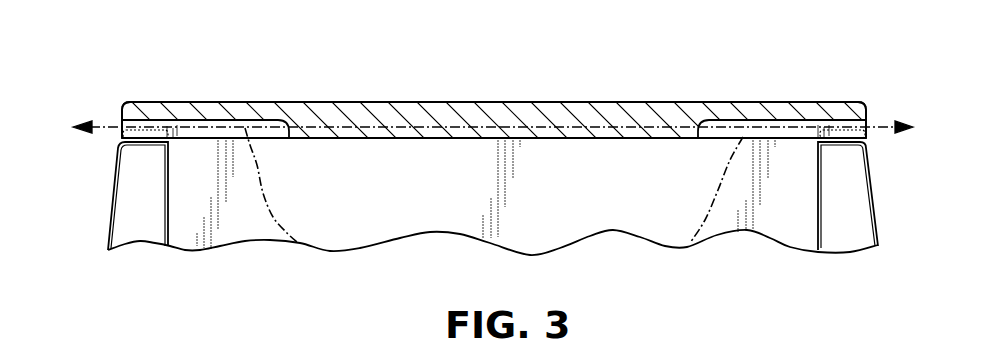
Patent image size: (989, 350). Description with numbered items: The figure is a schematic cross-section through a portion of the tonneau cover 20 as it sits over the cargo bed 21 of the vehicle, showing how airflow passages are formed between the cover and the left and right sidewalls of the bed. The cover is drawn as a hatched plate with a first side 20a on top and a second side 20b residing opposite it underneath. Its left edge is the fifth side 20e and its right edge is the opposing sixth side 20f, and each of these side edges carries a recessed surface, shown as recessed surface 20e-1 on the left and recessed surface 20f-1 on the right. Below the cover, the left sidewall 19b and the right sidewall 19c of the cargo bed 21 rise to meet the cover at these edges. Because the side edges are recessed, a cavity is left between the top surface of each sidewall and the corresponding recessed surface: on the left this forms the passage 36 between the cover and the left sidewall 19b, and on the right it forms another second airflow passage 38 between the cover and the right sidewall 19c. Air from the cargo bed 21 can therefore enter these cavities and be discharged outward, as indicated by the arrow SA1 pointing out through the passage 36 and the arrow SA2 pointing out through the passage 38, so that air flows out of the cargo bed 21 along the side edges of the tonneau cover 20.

The tonneau cover 20 is at (191, 90).
The first side 20a is at (392, 101).
The second side 20b is at (425, 139).
The fifth side 20e is at (124, 103).
The recessed surface 20e-1 is at (258, 119).
The sixth side 20f is at (867, 107).
The recessed surface 20f-1 is at (757, 119).
The arrow SA1 is at (100, 112).
The arrow SA2 is at (893, 117).
The passage 36 is at (130, 132).
The second airflow passage 38 is at (857, 135).
The left sidewall 19b is at (114, 174).
The right sidewall 19c is at (876, 197).
The cargo bed 21 is at (170, 219).